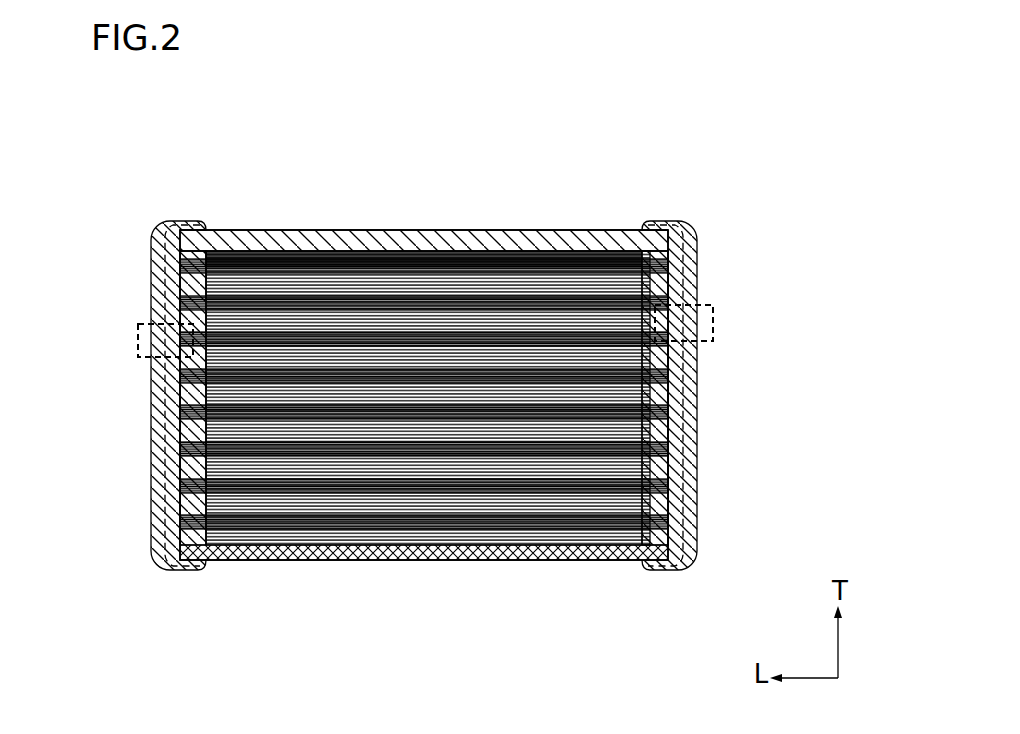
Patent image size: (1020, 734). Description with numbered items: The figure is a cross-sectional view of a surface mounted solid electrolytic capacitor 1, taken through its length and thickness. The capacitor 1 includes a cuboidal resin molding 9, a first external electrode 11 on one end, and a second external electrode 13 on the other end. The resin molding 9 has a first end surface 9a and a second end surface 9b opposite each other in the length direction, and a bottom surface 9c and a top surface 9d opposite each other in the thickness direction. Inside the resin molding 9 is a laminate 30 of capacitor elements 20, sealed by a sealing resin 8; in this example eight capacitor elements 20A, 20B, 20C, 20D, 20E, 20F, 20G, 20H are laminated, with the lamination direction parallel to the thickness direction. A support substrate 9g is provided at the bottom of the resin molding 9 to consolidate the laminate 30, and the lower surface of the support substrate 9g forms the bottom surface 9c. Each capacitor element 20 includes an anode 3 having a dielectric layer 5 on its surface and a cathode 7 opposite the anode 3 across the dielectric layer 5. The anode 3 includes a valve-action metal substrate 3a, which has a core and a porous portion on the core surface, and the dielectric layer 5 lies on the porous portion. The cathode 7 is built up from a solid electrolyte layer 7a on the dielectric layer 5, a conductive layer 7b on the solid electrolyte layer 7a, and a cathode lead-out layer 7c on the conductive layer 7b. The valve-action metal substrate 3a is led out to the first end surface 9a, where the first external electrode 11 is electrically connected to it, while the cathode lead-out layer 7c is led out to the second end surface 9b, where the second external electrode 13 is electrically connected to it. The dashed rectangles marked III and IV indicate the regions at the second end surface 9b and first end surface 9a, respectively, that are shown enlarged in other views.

The solid electrolytic capacitor 1 is at (670, 119).
The anode 3 is at (265, 150).
The valve-action metal substrate 3a is at (262, 246).
The dielectric layer 5 is at (308, 245).
The cathode 7 is at (328, 150).
The solid electrolyte layer 7a is at (358, 246).
The conductive layer 7b is at (392, 246).
The cathode lead-out layer 7c is at (428, 246).
The sealing resin 8 is at (480, 222).
The resin molding 9 is at (591, 218).
The first end surface 9a is at (168, 284).
The second end surface 9b is at (660, 237).
The bottom surface 9c is at (390, 551).
The top surface 9d is at (516, 230).
The support substrate 9g is at (453, 545).
The first external electrode 11 is at (158, 539).
The second external electrode 13 is at (680, 542).
The capacitor element 20 is at (235, 113).
The capacitor element 20A is at (652, 257).
The capacitor element 20B is at (652, 290).
The capacitor element 20C is at (652, 340).
The capacitor element 20D is at (652, 377).
The capacitor element 20E is at (652, 412).
The capacitor element 20F is at (652, 446).
The capacitor element 20G is at (652, 481).
The capacitor element 20H is at (652, 513).
The laminate 30 is at (540, 238).
The section III is at (701, 323).
The section IV is at (148, 339).